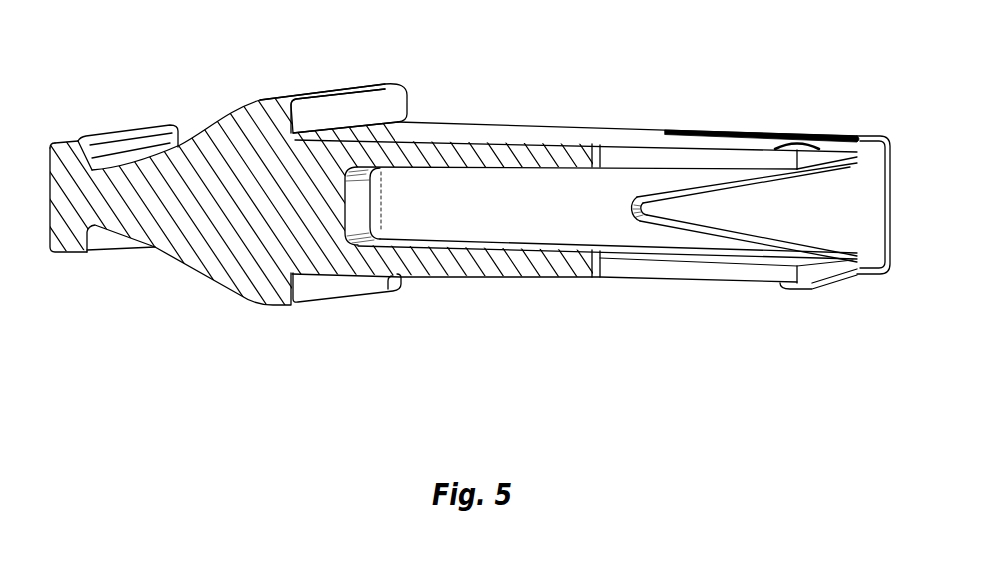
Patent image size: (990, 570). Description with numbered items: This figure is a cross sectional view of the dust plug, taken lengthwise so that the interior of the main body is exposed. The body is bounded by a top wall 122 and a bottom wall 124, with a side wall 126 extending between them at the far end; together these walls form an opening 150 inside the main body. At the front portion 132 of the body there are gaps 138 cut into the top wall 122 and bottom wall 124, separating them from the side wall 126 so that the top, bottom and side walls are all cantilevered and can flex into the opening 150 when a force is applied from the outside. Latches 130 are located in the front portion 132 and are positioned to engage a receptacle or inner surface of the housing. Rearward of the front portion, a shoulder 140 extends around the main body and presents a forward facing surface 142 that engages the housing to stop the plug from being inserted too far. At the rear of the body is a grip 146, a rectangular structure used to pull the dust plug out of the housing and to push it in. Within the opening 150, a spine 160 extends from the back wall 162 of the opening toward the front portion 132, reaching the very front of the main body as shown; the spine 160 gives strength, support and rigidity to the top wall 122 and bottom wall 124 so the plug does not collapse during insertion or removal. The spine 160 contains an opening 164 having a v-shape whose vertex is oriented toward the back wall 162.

The top wall 122 is at (517, 135).
The bottom wall 124 is at (523, 278).
The side wall 126 is at (884, 136).
The latches 130 is at (826, 140).
The front portion 132 is at (747, 307).
The gaps 138 is at (622, 158).
The shoulder 140 is at (343, 87).
The forward facing surface 142 is at (381, 88).
The grip 146 is at (111, 132).
The opening 150 is at (494, 220).
The spine 160 is at (460, 190).
The back wall 162 is at (356, 203).
The opening 164 is at (677, 229).